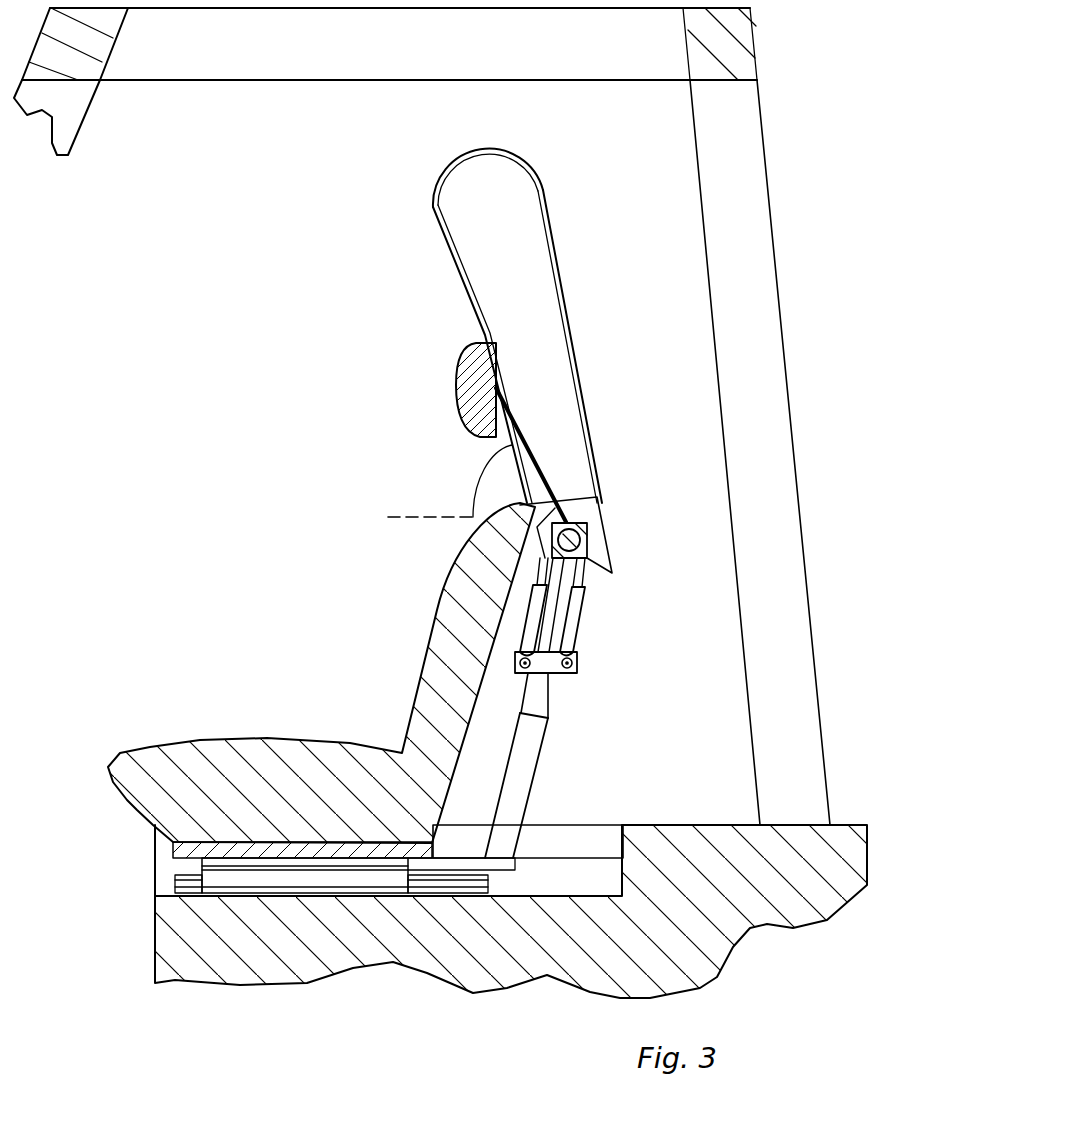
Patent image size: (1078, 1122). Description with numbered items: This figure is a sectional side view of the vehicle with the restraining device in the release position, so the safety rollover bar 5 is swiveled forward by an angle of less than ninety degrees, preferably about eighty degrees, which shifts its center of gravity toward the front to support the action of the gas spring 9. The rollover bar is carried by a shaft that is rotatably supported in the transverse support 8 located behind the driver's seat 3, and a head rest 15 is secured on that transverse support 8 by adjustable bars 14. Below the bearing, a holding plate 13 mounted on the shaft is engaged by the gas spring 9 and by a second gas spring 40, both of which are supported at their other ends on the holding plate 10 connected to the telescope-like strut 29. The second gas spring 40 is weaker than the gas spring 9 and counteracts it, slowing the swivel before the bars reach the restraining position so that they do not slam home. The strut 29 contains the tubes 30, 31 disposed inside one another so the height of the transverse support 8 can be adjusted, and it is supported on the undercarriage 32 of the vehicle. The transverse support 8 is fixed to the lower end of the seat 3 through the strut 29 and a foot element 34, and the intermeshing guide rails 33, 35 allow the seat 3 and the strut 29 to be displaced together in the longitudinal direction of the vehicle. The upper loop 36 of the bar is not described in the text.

The driver's seat 3 is at (420, 660).
The safety rollover bar 5 is at (572, 345).
The transverse support 8 is at (590, 522).
The gas spring 9 is at (585, 620).
The holding plate 10 is at (583, 673).
The holding plate 13 is at (610, 575).
The adjustable bar 14 is at (553, 478).
The head rest 15 is at (463, 358).
The telescope-like strut 29 is at (540, 765).
The tube 30 is at (553, 690).
The tube 31 is at (532, 800).
The undercarriage 32 is at (703, 825).
The guide rail 33 is at (492, 890).
The foot element 34 is at (450, 862).
The guide rail 35 is at (257, 880).
The headrest loop 36 is at (447, 183).
The second gas spring 40 is at (520, 645).